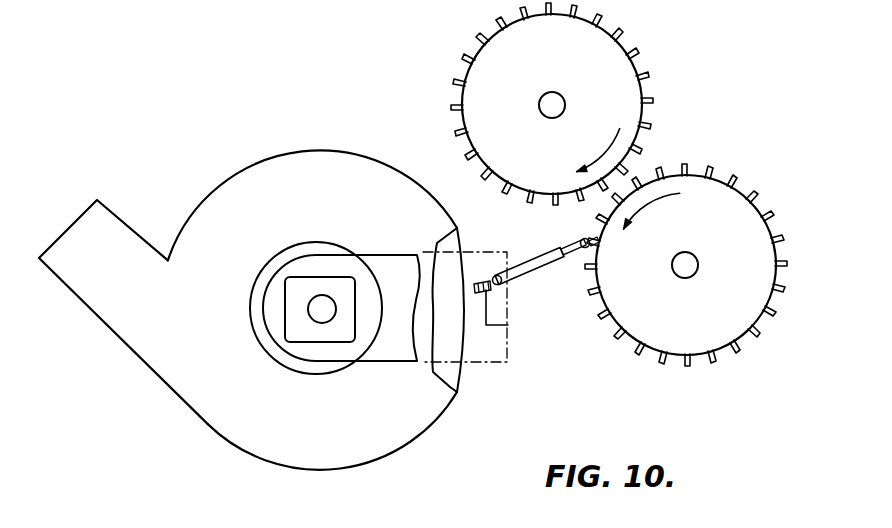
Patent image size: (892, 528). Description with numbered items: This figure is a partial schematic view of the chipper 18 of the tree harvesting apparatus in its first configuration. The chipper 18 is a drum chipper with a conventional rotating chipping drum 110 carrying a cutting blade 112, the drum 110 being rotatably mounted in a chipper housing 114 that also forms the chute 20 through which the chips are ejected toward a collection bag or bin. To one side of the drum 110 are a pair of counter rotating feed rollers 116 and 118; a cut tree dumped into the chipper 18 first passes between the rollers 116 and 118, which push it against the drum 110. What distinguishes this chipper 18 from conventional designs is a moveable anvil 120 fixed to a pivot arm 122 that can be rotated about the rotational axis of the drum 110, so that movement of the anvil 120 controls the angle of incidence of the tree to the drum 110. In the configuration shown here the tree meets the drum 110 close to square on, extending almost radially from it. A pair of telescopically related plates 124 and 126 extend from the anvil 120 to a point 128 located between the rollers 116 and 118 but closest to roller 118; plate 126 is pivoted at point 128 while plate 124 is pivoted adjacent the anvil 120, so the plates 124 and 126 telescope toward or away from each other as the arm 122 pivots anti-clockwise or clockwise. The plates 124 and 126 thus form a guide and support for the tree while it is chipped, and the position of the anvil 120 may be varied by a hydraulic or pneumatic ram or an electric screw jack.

The chipper 18 is at (355, 128).
The chute 20 is at (92, 235).
The chipping drum 110 is at (450, 333).
The cutting blade 112 is at (460, 258).
The chipper housing 114 is at (227, 197).
The feed roller 116 is at (482, 90).
The feed roller 118 is at (665, 318).
The moveable anvil 120 is at (506, 322).
The pivot arm 122 is at (395, 328).
The plate 124 is at (543, 270).
The plate 126 is at (566, 241).
The pivot point 128 is at (596, 247).